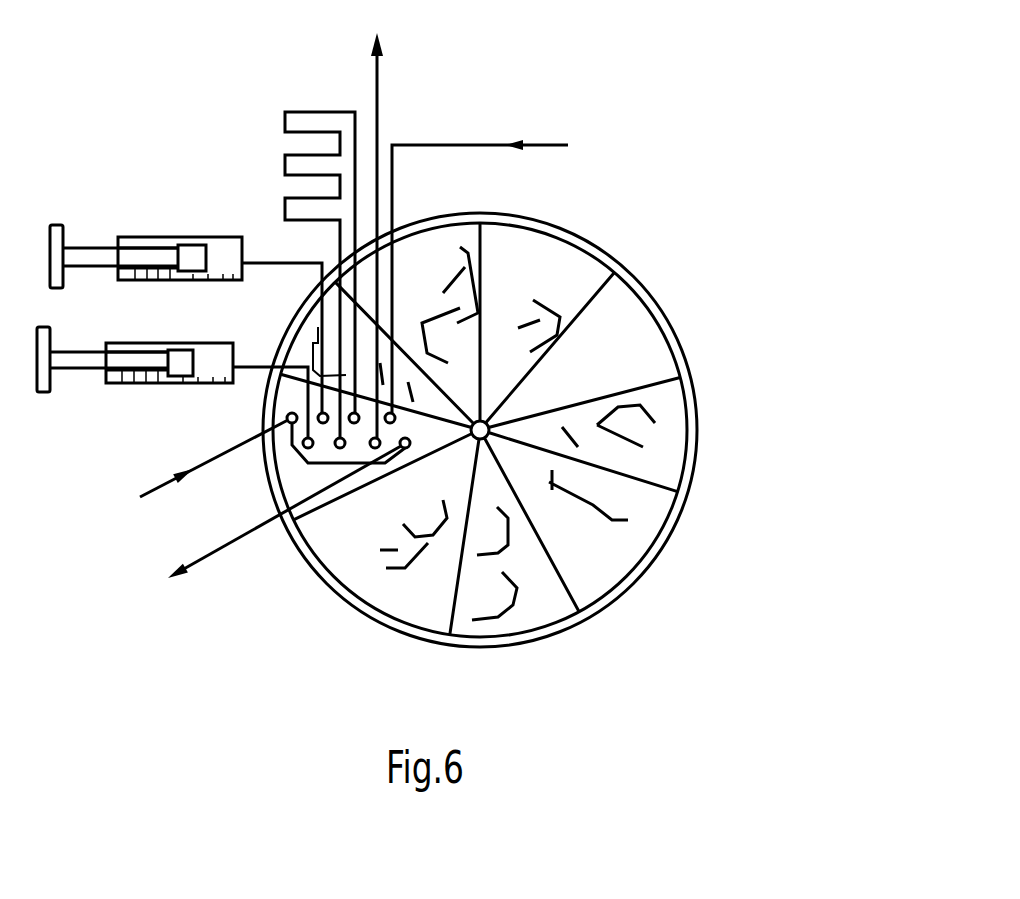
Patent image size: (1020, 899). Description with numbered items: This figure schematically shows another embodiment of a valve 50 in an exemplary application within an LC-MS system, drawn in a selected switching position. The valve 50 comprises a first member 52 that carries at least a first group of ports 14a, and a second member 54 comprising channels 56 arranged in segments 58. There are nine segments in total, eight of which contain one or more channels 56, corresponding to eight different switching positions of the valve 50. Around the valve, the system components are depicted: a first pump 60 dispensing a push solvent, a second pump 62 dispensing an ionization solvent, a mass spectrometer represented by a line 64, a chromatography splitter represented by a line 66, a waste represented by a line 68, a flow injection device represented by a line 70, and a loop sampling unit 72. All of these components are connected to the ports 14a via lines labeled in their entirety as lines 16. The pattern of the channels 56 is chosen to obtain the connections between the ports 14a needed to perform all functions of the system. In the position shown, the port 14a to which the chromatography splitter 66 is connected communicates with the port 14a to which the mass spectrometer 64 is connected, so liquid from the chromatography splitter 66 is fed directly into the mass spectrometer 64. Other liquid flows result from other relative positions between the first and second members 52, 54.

The valve 50 is at (684, 162).
The first member 52 is at (760, 306).
The second member 54 is at (716, 405).
The channels 56 is at (593, 503).
The segments 58 is at (537, 607).
The first pump 60 is at (135, 237).
The second pump 62 is at (118, 343).
The line representing mass spectrometer 64 is at (212, 557).
The line representing chromatography splitter 66 is at (155, 490).
The line representing waste 68 is at (378, 78).
The line representing flow injection device 70 is at (462, 145).
The loop sampling unit 72 is at (285, 112).
The lines 16 is at (306, 325).
The first group of ports 14a is at (268, 416).